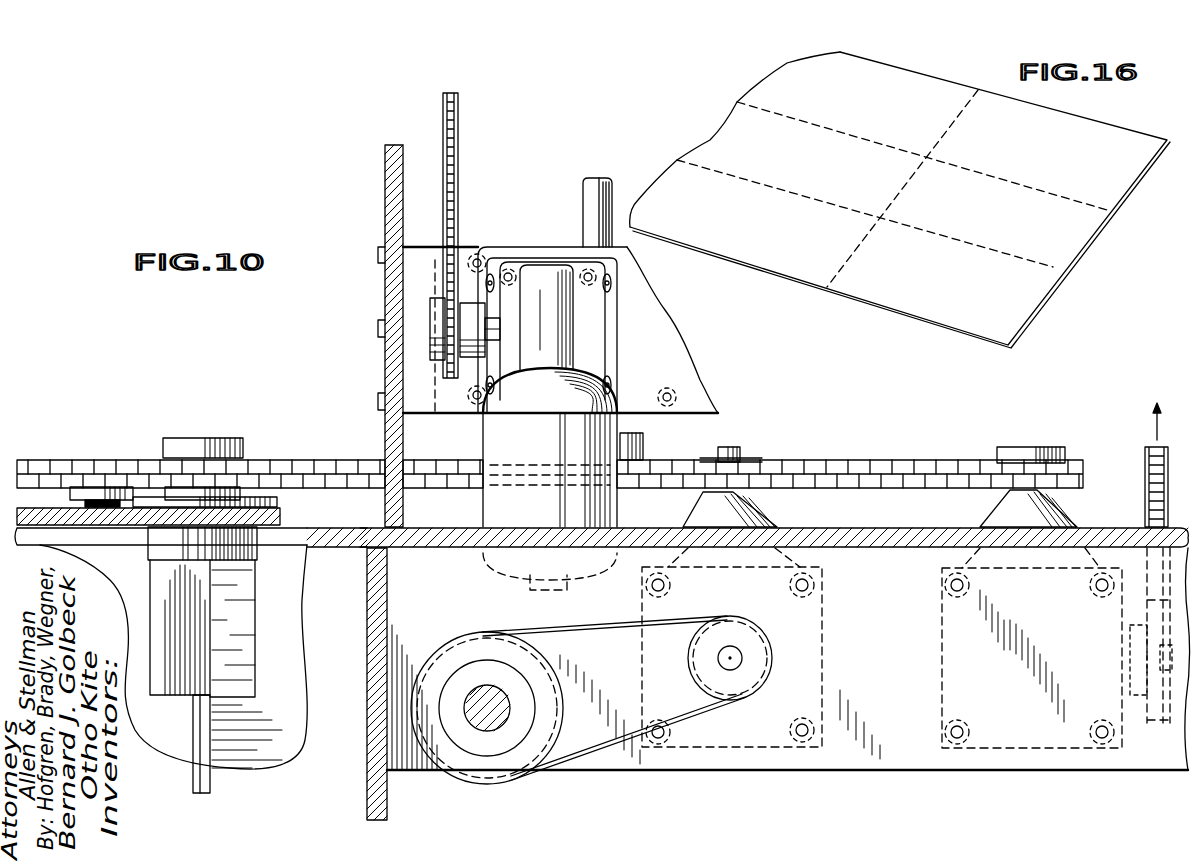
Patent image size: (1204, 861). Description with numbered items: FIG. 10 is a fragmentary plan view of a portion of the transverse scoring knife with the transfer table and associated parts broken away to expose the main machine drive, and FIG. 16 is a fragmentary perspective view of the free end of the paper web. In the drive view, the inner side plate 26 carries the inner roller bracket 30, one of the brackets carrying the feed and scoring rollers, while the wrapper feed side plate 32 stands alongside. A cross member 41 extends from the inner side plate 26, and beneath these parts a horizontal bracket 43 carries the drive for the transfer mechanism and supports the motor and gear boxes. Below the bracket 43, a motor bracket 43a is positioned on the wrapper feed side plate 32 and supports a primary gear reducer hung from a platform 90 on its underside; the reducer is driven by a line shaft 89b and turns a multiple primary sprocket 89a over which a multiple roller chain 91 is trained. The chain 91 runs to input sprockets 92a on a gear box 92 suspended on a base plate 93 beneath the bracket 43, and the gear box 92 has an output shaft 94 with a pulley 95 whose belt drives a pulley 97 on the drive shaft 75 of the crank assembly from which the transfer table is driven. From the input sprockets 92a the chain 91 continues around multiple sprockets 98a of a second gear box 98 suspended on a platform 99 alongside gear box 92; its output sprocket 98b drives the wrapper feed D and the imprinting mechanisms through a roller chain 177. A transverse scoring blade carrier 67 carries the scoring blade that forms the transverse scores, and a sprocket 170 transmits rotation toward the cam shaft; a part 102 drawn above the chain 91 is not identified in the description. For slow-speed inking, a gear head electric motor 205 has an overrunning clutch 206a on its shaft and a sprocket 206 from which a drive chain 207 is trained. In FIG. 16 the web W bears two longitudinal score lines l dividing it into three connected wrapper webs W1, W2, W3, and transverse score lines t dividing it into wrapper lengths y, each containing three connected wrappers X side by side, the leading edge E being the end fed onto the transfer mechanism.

In FIG. 10, the inner side plate 26 is at (352, 548).
In FIG. 10, the inner roller bracket 30 is at (280, 517).
In FIG. 10, the wrapper feed side plate 32 is at (385, 164).
In FIG. 10, the cross member 41 is at (388, 603).
In FIG. 10, the horizontal bracket 43 is at (610, 765).
In FIG. 10, the motor bracket 43a is at (528, 257).
In FIG. 10, the transverse scoring blade carrier 67 is at (245, 680).
In FIG. 10, the drive shaft 75 is at (470, 690).
In FIG. 10, the multiple primary sprocket 89a is at (642, 460).
In FIG. 10, the line shaft 89b is at (594, 178).
In FIG. 10, the platform 90 is at (435, 260).
In FIG. 10, the multiple roller chain 91 is at (147, 432).
In FIG. 10, the gear box 92 is at (770, 505).
In FIG. 10, the input sprockets 92a is at (762, 460).
In FIG. 10, the base plate 93 is at (822, 602).
In FIG. 10, the output shaft 94 is at (728, 647).
In FIG. 10, the pulley 95 is at (760, 682).
In FIG. 10, the pulley 97 is at (547, 667).
In FIG. 10, the second gear box 98 is at (1000, 510).
In FIG. 10, the multiple sprockets 98a is at (1100, 440).
In FIG. 10, the output sprocket 98b is at (1160, 725).
In FIG. 10, the platform 99 is at (946, 652).
In FIG. 10, the block 102 is at (290, 432).
In FIG. 10, the sprocket 170 is at (212, 722).
In FIG. 10, the roller chain 177 is at (1145, 507).
In FIG. 10, the gear head electric motor 205 is at (612, 395).
In FIG. 10, the sprocket 206 is at (453, 383).
In FIG. 10, the overrunning clutch 206a is at (470, 303).
In FIG. 10, the drive chain 207 is at (460, 156).
In FIG. 10, the wrapper feed D is at (383, 212).
In FIG. 16, the leading edge E is at (1112, 220).
In FIG. 16, the paper web W is at (899, 306).
In FIG. 16, the wrapper web W1 is at (778, 258).
In FIG. 16, the wrapper web W2 is at (718, 128).
In FIG. 16, the wrapper web W3 is at (935, 88).
In FIG. 16, the wrapper X is at (1053, 164).
In FIG. 16, the longitudinal score lines l is at (892, 184).
In FIG. 16, the transverse score lines t is at (902, 188).
In FIG. 16, the wrapper length y is at (987, 305).